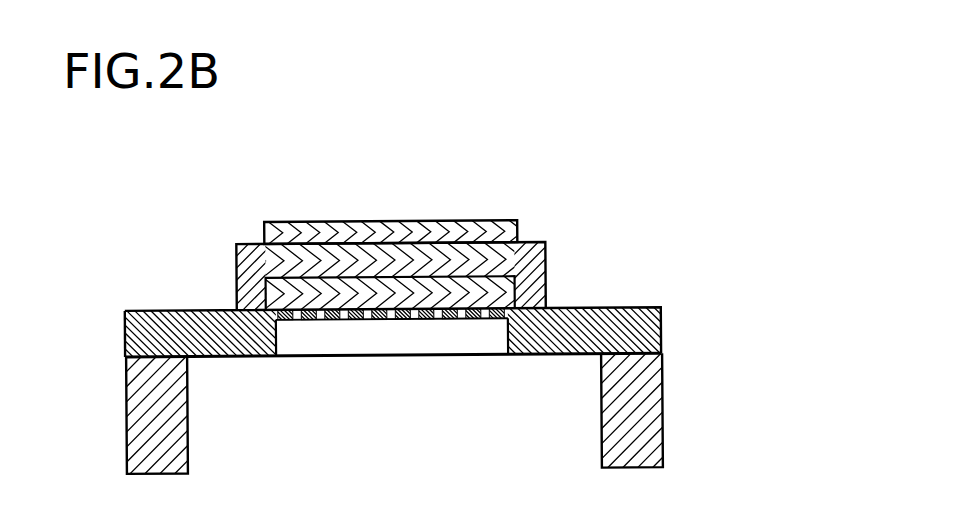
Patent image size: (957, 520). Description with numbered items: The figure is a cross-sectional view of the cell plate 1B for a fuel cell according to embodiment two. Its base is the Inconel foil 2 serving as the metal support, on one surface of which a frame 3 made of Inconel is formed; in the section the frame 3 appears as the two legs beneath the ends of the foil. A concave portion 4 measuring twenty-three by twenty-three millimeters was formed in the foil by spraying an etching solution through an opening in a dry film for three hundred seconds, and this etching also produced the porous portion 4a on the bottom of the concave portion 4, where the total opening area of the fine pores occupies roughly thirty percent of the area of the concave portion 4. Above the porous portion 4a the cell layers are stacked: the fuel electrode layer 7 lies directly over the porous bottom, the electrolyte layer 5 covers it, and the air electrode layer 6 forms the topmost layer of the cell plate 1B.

The cell plate for the fuel cell 1B is at (493, 147).
The Inconel foil 2 is at (645, 309).
The frame 3 is at (650, 413).
The concave portion 4 is at (415, 338).
The porous portion 4a is at (338, 316).
The electrolyte layer 5 is at (547, 243).
The air electrode layer 6 is at (367, 221).
The fuel electrode layer 7 is at (277, 296).